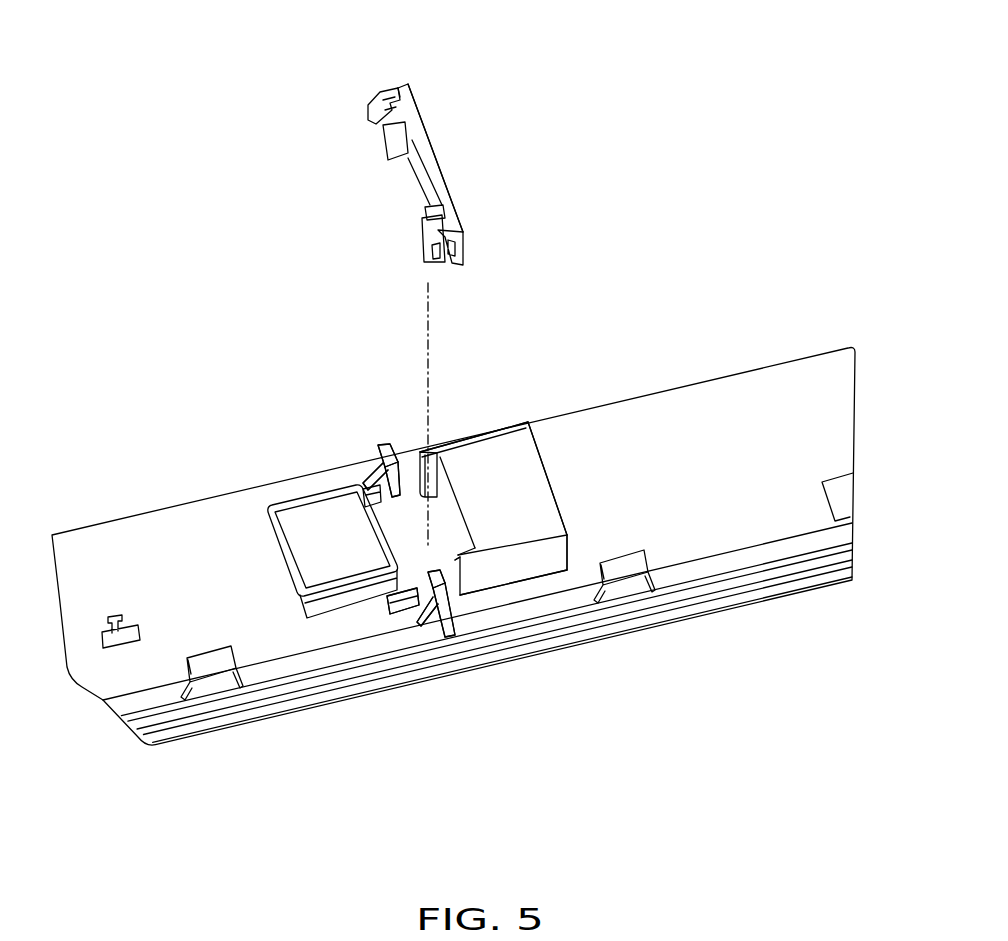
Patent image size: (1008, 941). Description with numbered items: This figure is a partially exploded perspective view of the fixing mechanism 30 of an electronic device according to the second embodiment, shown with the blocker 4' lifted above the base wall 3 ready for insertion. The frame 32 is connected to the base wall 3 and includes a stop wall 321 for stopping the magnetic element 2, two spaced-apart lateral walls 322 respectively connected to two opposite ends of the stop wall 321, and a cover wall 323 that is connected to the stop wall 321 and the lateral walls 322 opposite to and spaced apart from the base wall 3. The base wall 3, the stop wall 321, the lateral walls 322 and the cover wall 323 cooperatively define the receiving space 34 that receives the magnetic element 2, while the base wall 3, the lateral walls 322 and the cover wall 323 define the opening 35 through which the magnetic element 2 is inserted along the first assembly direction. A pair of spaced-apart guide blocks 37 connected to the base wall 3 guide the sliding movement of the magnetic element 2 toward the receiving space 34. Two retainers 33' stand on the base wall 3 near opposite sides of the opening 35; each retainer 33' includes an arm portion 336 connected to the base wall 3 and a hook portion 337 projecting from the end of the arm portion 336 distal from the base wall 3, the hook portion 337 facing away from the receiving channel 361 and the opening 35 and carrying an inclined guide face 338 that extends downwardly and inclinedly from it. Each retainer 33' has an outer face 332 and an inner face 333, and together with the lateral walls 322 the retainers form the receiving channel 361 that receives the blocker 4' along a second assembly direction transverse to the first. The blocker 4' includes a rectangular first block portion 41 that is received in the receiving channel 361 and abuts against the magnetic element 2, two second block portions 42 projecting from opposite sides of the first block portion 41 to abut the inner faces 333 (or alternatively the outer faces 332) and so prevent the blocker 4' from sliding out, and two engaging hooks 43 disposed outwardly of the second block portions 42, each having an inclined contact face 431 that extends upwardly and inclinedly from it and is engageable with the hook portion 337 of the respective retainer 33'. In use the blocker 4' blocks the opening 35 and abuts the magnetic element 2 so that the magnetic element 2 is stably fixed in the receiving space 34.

The magnetic element 2 is at (303, 540).
The base wall 3 is at (152, 510).
The fixing mechanism 30 is at (550, 143).
The frame 32 is at (569, 521).
The stop wall 321 is at (556, 452).
The lateral walls 322 is at (596, 603).
The cover wall 323 is at (520, 458).
The retainer 33' is at (361, 551).
The outer face 332 is at (383, 450).
The inner face 333 is at (442, 462).
The arm portion 336 is at (402, 468).
The hook portion 337 is at (380, 465).
The inclined guide face 338 is at (537, 560).
The receiving space 34 is at (448, 533).
The opening 35 is at (517, 457).
The receiving channel 361 is at (457, 602).
The guide blocks 37 is at (353, 500).
The blocker 4' is at (365, 156).
The first block portion 41 is at (430, 157).
The second block portions 42 is at (393, 133).
The engaging hooks 43 is at (372, 102).
The inclined contact face 431 is at (435, 265).